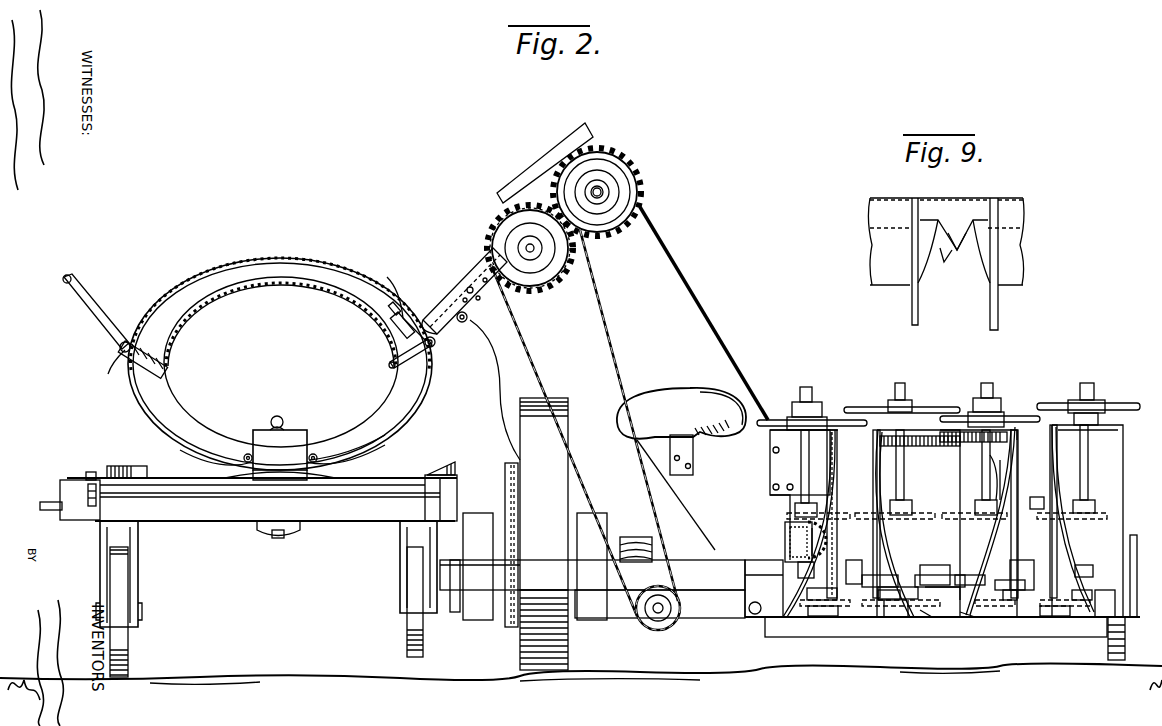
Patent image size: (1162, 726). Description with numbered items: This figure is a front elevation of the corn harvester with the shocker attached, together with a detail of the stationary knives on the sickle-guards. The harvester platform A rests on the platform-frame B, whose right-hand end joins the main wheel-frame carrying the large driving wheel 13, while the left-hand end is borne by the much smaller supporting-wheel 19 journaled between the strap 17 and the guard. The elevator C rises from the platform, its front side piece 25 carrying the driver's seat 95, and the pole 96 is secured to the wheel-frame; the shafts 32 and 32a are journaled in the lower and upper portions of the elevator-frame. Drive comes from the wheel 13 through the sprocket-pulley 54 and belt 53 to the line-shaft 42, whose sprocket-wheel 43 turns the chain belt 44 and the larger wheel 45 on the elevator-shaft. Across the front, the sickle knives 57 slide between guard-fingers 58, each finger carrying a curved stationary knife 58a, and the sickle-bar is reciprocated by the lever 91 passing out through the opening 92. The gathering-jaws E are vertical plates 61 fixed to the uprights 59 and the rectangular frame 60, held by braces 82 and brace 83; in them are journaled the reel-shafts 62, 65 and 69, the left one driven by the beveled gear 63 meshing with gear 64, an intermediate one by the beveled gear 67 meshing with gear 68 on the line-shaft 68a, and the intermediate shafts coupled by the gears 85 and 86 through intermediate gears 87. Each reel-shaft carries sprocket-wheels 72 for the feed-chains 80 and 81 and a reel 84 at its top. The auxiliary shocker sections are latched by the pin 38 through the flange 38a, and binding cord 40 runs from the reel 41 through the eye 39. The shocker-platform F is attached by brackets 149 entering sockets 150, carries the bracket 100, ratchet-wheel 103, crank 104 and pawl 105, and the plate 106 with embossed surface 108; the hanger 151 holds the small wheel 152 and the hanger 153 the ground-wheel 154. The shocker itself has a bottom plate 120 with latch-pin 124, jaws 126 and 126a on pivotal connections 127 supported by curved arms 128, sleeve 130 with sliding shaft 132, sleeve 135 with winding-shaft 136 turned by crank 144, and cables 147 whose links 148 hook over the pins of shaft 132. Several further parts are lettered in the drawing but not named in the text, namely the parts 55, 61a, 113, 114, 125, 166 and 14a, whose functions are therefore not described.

In FIG. 2, the shocker-platform F is at (222, 512).
In FIG. 2, the main or driving wheel 13 is at (544, 534).
In FIG. 2, the strap 17 is at (1146, 576).
In FIG. 2, the supporting-wheel 19 is at (1124, 640).
In FIG. 2, the side piece 25 is at (695, 458).
In FIG. 2, the shaft 32 is at (790, 540).
In FIG. 2, the parallel shaft 32a is at (605, 192).
In FIG. 2, the pin 38 is at (458, 285).
In FIG. 2, the flange 38a is at (478, 266).
In FIG. 2, the eye 39 is at (468, 317).
In FIG. 2, the binding thread or cord 40 is at (798, 565).
In FIG. 2, the reel 41 is at (800, 520).
In FIG. 2, the shaft 42 is at (655, 618).
In FIG. 2, the sprocket-wheel 43 is at (658, 595).
In FIG. 2, the chain belt 44 is at (634, 178).
In FIG. 2, the larger wheel 45 is at (951, 578).
In FIG. 2, the belt 53 is at (508, 498).
In FIG. 2, the sprocket-pulley 54 is at (506, 468).
In FIG. 2, the base bar 55 is at (968, 618).
In FIG. 2, the knives 57 is at (878, 575).
In FIG. 9, the knives 57 is at (955, 232).
In FIG. 2, the guard-fingers 58 is at (1052, 584).
In FIG. 9, the guard-fingers 58 is at (1040, 247).
In FIG. 2, the knife 58a is at (850, 600).
In FIG. 9, the knife 58a is at (938, 262).
In FIG. 2, the upright 59 is at (960, 464).
In FIG. 2, the rectangular frame 60 is at (1017, 430).
In FIG. 2, the vertical plates 61 is at (838, 460).
In FIG. 9, the vertical plates 61 is at (912, 315).
In FIG. 2, the standard foot 61a is at (790, 615).
In FIG. 2, the vertical shaft 62 is at (1088, 452).
In FIG. 2, the beveled gear 63 is at (1085, 567).
In FIG. 2, the gear 64 is at (951, 613).
In FIG. 2, the vertical shaft 65 is at (985, 468).
In FIG. 2, the beveled gear 67 is at (912, 580).
In FIG. 2, the gear 68 is at (910, 605).
In FIG. 2, the shaft 68a is at (886, 605).
In FIG. 2, the fourth shaft 69 is at (805, 448).
In FIG. 2, the sprocket-wheels 72 is at (996, 507).
In FIG. 2, the endless chain 80 is at (945, 517).
In FIG. 2, the second belt 81 is at (812, 616).
In FIG. 2, the braces 82 is at (942, 596).
In FIG. 2, the brace 83 is at (775, 609).
In FIG. 2, the reel 84 is at (846, 393).
In FIG. 2, the gear 85 is at (882, 440).
In FIG. 2, the gear 86 is at (1000, 476).
In FIG. 2, the intermediate gears 87 is at (965, 465).
In FIG. 2, the lever 91 is at (950, 585).
In FIG. 2, the opening 92 is at (925, 618).
In FIG. 2, the driver's seat 95 is at (688, 392).
In FIG. 2, the pole 96 is at (635, 538).
In FIG. 2, the bracket 100 is at (285, 528).
In FIG. 2, the ratchet-wheel 103 is at (92, 475).
In FIG. 2, the crank 104 is at (50, 497).
In FIG. 2, the pawl 105 is at (90, 510).
In FIG. 2, the plate 106 is at (190, 480).
In FIG. 2, the embossed surface 108 is at (250, 493).
In FIG. 2, the block 113 is at (148, 470).
In FIG. 2, the wedge block 114 is at (447, 465).
In FIG. 2, the bottom plate or board 120 is at (280, 455).
In FIG. 2, the latch-pin 124 is at (248, 452).
In FIG. 2, the knob 125 is at (281, 420).
In FIG. 2, the jaw 126 is at (355, 428).
In FIG. 2, the jaw 126a is at (182, 420).
In FIG. 2, the pivotal connection 127 is at (316, 452).
In FIG. 2, the curved arms 128 is at (170, 455).
In FIG. 2, the sleeve 130 is at (420, 358).
In FIG. 2, the shaft 132 is at (434, 346).
In FIG. 2, the sleeve 135 is at (170, 370).
In FIG. 2, the shaft 136 is at (124, 360).
In FIG. 2, the crank 144 is at (126, 296).
In FIG. 2, the ropes, cables, or chains 147 is at (190, 300).
In FIG. 2, the links 148 is at (395, 310).
In FIG. 2, the brackets 149 is at (458, 615).
In FIG. 2, the sockets 150 is at (448, 588).
In FIG. 2, the hanger 151 is at (400, 528).
In FIG. 2, the small wheel 152 is at (415, 630).
In FIG. 2, the hanger 153 is at (102, 555).
In FIG. 2, the ground-wheel 154 is at (136, 648).
In FIG. 2, the rod 166 is at (918, 465).
In FIG. 2, the bracket 14a is at (1119, 581).
In FIG. 2, the platform A is at (940, 572).
In FIG. 2, the platform-frame B is at (708, 548).
In FIG. 2, the elevator C is at (632, 271).
In FIG. 2, the gathering-jaws E is at (1000, 521).